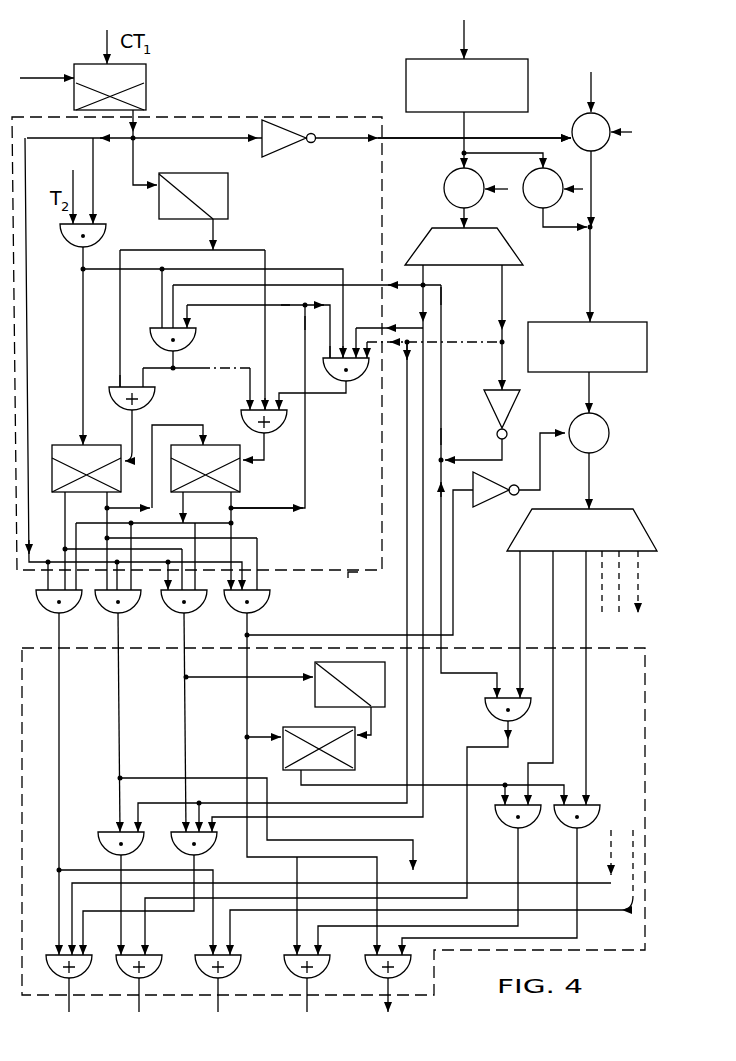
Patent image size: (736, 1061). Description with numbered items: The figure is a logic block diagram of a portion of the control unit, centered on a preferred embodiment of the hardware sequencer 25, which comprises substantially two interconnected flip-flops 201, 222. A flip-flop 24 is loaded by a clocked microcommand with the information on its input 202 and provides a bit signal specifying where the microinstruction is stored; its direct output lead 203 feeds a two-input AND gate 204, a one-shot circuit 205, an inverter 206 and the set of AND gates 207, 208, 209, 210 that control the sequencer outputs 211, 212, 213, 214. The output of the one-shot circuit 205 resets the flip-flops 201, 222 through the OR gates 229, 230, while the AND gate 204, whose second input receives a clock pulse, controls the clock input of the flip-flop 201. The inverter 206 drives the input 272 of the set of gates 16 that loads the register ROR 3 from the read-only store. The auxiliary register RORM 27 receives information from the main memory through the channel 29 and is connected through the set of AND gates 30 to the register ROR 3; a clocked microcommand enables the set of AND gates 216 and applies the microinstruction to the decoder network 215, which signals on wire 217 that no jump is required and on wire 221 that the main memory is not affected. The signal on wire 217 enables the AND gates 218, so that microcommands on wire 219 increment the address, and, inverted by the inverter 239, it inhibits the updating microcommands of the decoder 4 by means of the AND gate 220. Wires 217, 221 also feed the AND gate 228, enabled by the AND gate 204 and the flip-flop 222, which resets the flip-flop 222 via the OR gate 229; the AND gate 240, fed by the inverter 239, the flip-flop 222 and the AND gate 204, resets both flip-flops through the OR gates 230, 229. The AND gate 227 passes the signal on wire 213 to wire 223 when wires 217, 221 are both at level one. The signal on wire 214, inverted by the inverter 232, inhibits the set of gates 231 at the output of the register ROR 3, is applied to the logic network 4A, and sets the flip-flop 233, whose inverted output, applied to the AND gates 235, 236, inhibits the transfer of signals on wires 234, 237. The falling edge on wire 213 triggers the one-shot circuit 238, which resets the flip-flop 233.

The input 202 is at (22, 58).
The flip-flop 24 is at (147, 98).
The direct output lead 203 is at (138, 122).
The inverter 206 is at (304, 160).
The one-shot circuit 205 is at (228, 196).
The two-input AND gate 204 is at (105, 229).
The hardware sequencer 25 is at (197, 362).
The AND gate 240 is at (196, 340).
The OR gate 230 is at (159, 396).
The OR gate 229 is at (281, 433).
The AND gate 228 is at (358, 381).
The flip-flop 201 is at (51, 453).
The flip-flop 222 is at (240, 481).
The AND gate 207 is at (38, 606).
The AND gate 208 is at (97, 606).
The AND gate 209 is at (163, 606).
The AND gate 210 is at (271, 602).
The output wire 211 is at (60, 660).
The output wire 212 is at (120, 660).
The output wire 213 is at (187, 686).
The output wire 214 is at (246, 635).
The one-shot circuit 238 is at (313, 694).
The flip-flop 233 is at (356, 752).
The AND gates 218 is at (108, 832).
The AND gate 227 is at (212, 855).
The wire 223 is at (167, 913).
The wire 219 is at (140, 987).
The channel 29 is at (464, 30).
The auxiliary register RORM 27 is at (406, 88).
The set of AND gates 216 is at (447, 203).
The set of AND gates 30 is at (525, 176).
The set of gates 16 is at (603, 118).
The input 272 is at (558, 136).
The decoder network 215 is at (486, 228).
The wire 221 is at (425, 278).
The wire 217 is at (505, 291).
The output register ROR 3 is at (636, 320).
The inverter 239 is at (514, 410).
The set of gates 231 is at (617, 423).
The inverter 232 is at (490, 507).
The decoder 4 is at (622, 510).
The logic network 4A is at (640, 648).
The AND gate 220 is at (485, 718).
The AND gate 235 is at (500, 829).
The AND gate 236 is at (558, 829).
The wire 234 is at (517, 871).
The wire 237 is at (576, 871).